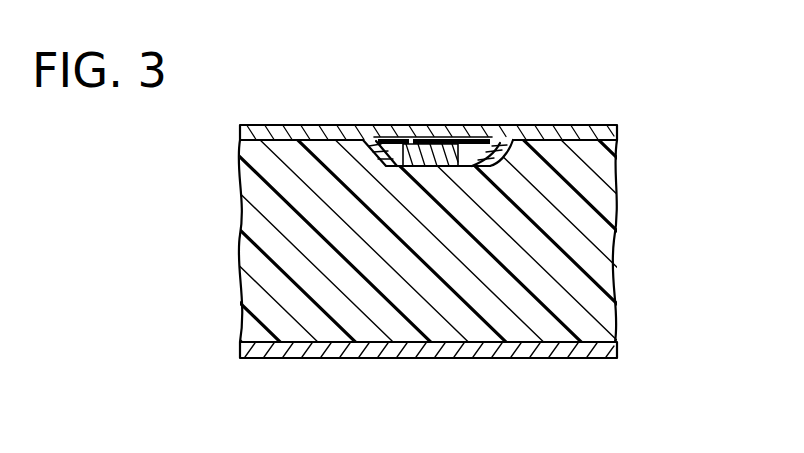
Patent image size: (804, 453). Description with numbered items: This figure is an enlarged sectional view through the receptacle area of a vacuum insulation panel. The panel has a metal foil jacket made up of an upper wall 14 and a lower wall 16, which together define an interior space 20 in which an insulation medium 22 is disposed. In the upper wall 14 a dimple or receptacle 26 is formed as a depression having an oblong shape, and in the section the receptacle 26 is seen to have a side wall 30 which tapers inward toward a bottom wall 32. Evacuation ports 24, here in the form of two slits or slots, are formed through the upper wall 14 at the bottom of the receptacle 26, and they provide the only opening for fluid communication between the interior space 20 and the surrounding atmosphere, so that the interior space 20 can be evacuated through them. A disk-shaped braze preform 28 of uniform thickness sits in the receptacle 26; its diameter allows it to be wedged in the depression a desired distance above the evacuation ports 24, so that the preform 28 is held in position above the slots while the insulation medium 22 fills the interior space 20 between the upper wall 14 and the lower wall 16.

The upper wall 14 is at (591, 127).
The lower wall 16 is at (476, 360).
The interior space 20 is at (272, 125).
The insulation medium 22 is at (590, 229).
The evacuation ports 24 is at (458, 143).
The receptacle 26 is at (372, 152).
The braze preform 28 is at (401, 128).
The side wall 30 is at (512, 146).
The bottom wall 32 is at (438, 167).